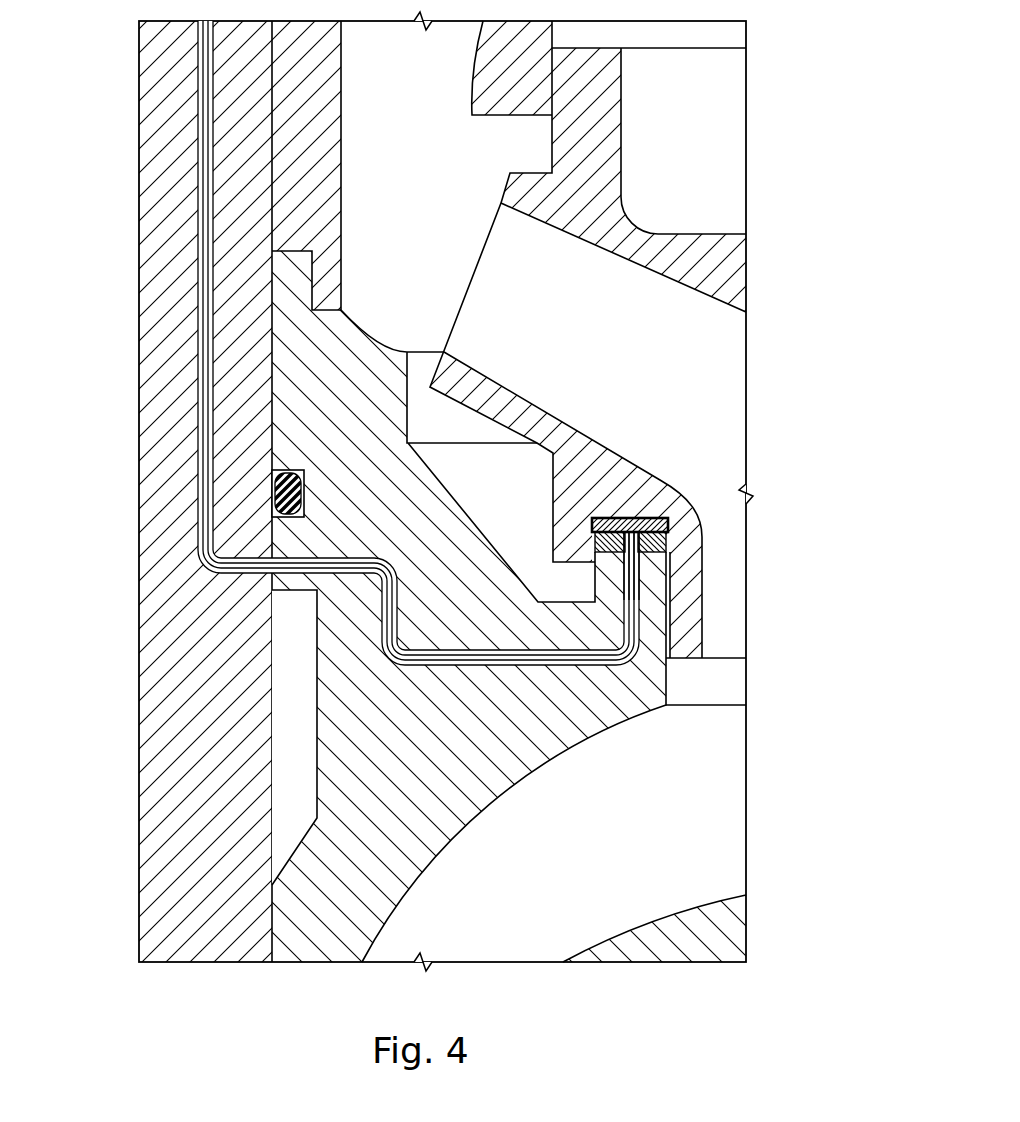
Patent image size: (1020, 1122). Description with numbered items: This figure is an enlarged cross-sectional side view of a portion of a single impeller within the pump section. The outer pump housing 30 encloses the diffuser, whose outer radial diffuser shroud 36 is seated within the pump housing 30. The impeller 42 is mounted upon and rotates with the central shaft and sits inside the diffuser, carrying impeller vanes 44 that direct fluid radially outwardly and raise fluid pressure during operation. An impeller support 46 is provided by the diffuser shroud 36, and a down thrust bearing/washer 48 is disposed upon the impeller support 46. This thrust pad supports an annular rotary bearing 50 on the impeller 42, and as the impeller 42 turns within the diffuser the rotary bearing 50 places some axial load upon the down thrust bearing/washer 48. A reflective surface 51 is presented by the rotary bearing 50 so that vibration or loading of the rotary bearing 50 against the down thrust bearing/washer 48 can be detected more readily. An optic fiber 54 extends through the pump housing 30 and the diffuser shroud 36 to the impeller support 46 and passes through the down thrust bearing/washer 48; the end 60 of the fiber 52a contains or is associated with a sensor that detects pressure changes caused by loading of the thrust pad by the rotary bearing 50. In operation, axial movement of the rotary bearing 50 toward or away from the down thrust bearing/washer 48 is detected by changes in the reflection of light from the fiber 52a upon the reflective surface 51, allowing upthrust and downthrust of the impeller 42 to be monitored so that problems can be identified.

The pump housing 30 is at (139, 222).
The diffuser shroud 36 is at (325, 700).
The impeller 42 is at (622, 210).
The impeller vanes 44 is at (573, 235).
The impeller support 46 is at (594, 579).
The down thrust bearing/washer 48 is at (668, 546).
The rotary bearing 50 is at (592, 525).
The reflective surface 51 is at (651, 533).
The fiber 52a is at (203, 132).
The optic fiber 54 is at (213, 308).
The end of the fiber 60 is at (628, 520).